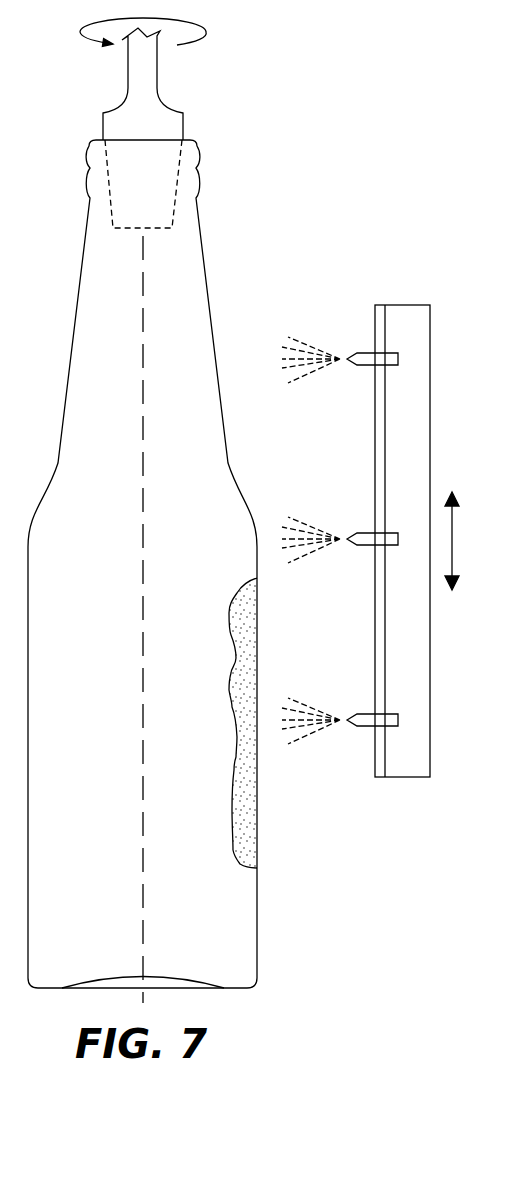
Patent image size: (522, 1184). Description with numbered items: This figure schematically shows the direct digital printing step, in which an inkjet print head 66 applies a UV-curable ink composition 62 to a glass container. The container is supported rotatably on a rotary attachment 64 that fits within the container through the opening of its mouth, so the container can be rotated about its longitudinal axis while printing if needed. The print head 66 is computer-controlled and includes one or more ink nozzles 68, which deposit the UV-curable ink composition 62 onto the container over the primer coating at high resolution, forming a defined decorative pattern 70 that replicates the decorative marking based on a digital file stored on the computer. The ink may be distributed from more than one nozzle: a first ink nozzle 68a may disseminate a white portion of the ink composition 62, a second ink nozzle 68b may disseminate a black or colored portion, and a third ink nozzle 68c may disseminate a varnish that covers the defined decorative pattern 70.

The UV-curable ink composition 62 is at (236, 658).
The rotary attachment 64 is at (170, 120).
The print head 66 is at (413, 388).
The ink nozzles 68 is at (353, 341).
The first ink nozzle 68a is at (355, 366).
The second ink nozzle 68b is at (360, 541).
The third ink nozzle 68c is at (362, 723).
The defined decorative pattern 70 is at (224, 777).